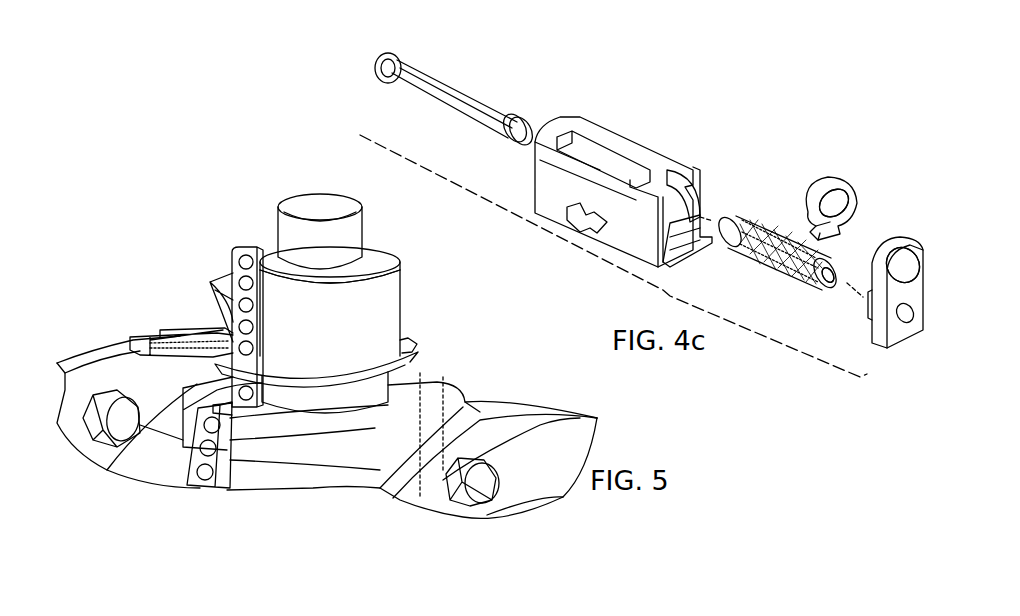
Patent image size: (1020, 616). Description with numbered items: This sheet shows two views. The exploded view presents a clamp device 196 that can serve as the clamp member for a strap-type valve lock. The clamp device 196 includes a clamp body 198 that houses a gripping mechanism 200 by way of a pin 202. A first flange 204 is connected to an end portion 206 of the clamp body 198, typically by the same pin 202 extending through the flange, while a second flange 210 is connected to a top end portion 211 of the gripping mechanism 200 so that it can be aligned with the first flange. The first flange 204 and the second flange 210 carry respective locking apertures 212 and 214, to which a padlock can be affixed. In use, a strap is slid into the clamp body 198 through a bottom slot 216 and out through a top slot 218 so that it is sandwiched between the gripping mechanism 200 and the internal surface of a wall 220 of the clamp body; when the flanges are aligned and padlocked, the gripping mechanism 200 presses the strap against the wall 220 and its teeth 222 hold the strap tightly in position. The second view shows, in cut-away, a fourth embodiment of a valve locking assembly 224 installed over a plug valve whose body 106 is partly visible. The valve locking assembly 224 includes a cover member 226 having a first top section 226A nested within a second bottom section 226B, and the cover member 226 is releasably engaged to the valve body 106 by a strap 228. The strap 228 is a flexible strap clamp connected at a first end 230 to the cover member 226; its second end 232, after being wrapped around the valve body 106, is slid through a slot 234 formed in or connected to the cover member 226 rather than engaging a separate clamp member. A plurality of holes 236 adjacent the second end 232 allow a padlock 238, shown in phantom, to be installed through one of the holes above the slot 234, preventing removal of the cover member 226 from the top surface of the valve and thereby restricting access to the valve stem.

In FIG. 4C, the clamp device 196 is at (709, 70).
In FIG. 4C, the clamp body 198 is at (590, 128).
In FIG. 4C, the gripping mechanism 200 is at (820, 288).
In FIG. 4C, the pin 202 is at (416, 82).
In FIG. 4C, the first flange 204 is at (900, 247).
In FIG. 4C, the end portion 206 is at (709, 182).
In FIG. 4C, the second flange 210 is at (836, 177).
In FIG. 4C, the top end portion 211 is at (866, 252).
In FIG. 4C, the locking aperture 212 is at (919, 255).
In FIG. 4C, the locking aperture 214 is at (843, 200).
In FIG. 4C, the bottom slot 216 is at (582, 226).
In FIG. 4C, the top slot 218 is at (630, 158).
In FIG. 4C, the wall 220 is at (588, 180).
In FIG. 4C, the teeth 222 is at (758, 270).
In FIG. 5, the valve locking assembly 224 is at (198, 224).
In FIG. 5, the cover member 226 is at (381, 216).
In FIG. 5, the first top section 226A is at (322, 200).
In FIG. 5, the second bottom section 226B is at (400, 268).
In FIG. 5, the strap 228 is at (200, 490).
In FIG. 5, the first end 230 is at (414, 340).
In FIG. 5, the second end 232 is at (252, 244).
In FIG. 5, the slot 234 is at (150, 378).
In FIG. 5, the holes 236 is at (214, 284).
In FIG. 5, the padlock 238 is at (177, 333).
In FIG. 5, the body 106 is at (282, 492).